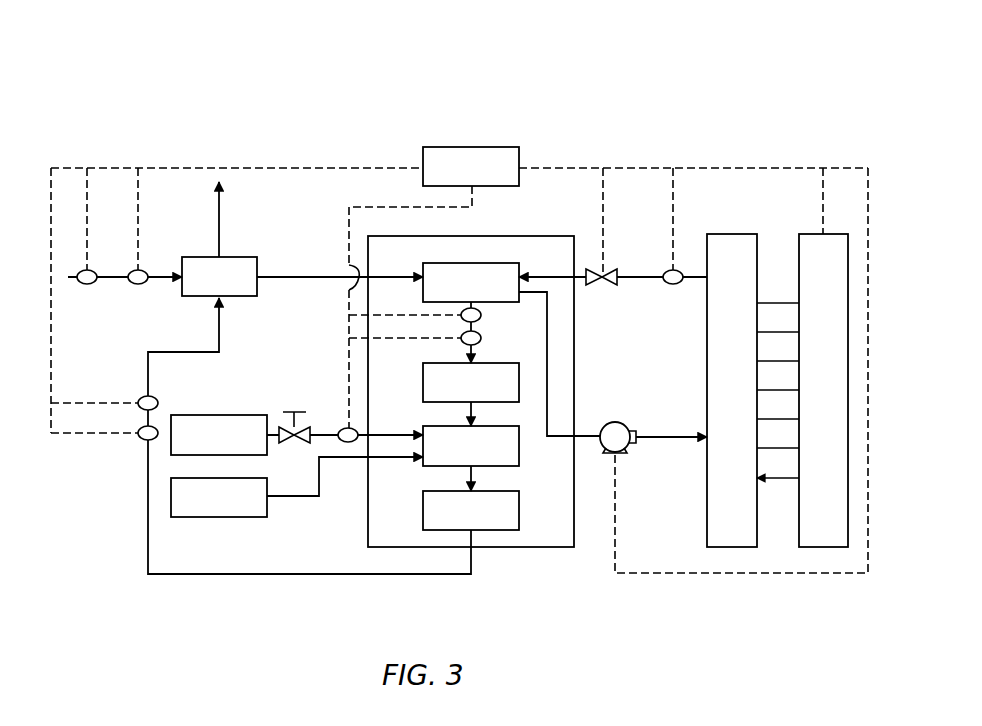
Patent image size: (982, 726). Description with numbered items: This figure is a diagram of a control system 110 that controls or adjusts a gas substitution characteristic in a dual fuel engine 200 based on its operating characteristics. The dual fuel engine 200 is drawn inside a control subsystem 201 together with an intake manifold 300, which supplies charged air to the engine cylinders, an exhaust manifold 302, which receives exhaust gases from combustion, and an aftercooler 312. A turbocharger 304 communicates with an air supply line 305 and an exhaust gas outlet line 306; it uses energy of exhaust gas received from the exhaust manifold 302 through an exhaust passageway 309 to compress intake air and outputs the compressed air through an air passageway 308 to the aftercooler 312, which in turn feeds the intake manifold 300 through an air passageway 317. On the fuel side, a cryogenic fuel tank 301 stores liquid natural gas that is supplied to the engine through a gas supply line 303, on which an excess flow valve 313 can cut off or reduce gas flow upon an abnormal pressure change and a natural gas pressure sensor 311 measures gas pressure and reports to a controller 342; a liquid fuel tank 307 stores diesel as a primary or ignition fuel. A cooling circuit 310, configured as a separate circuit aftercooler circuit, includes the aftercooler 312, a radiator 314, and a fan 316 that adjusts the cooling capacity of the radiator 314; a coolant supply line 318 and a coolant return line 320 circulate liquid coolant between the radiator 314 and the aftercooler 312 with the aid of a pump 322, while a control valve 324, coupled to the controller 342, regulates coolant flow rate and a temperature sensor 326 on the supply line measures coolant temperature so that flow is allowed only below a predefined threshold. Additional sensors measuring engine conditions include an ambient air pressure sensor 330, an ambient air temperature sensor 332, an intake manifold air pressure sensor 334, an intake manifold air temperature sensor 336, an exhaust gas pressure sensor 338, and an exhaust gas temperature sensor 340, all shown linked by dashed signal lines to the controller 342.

The control system 110 is at (222, 90).
The controller 342 is at (487, 177).
The air supply line 305 is at (110, 275).
The exhaust gas outlet line 306 is at (217, 221).
The air passageway 308 is at (303, 275).
The turbocharger 304 is at (235, 287).
The ambient air pressure sensor 330 is at (88, 285).
The ambient air temperature sensor 332 is at (140, 285).
The exhaust gas temperature sensor 340 is at (138, 400).
The exhaust gas pressure sensor 338 is at (138, 436).
The exhaust passageway 309 is at (148, 538).
The cryogenic fuel tank 301 is at (235, 445).
The liquid fuel tank 307 is at (235, 508).
The excess flow valve 313 is at (294, 445).
The natural gas pressure sensor 311 is at (345, 428).
The gas supply line 303 is at (388, 434).
The control subsystem 201 is at (533, 236).
The aftercooler 312 is at (487, 293).
The intake manifold 300 is at (487, 393).
The dual fuel engine 200 is at (487, 456).
The exhaust manifold 302 is at (487, 521).
The intake manifold air pressure sensor 334 is at (461, 315).
The intake manifold air temperature sensor 336 is at (461, 340).
The air passageway 317 is at (480, 330).
The coolant supply line 318 is at (636, 276).
The control valve 324 is at (598, 286).
The temperature sensor 326 is at (673, 285).
The pump 322 is at (614, 422).
The coolant return line 320 is at (670, 435).
The cooling circuit 310 is at (722, 224).
The radiator 314 is at (748, 403).
The fan 316 is at (840, 403).